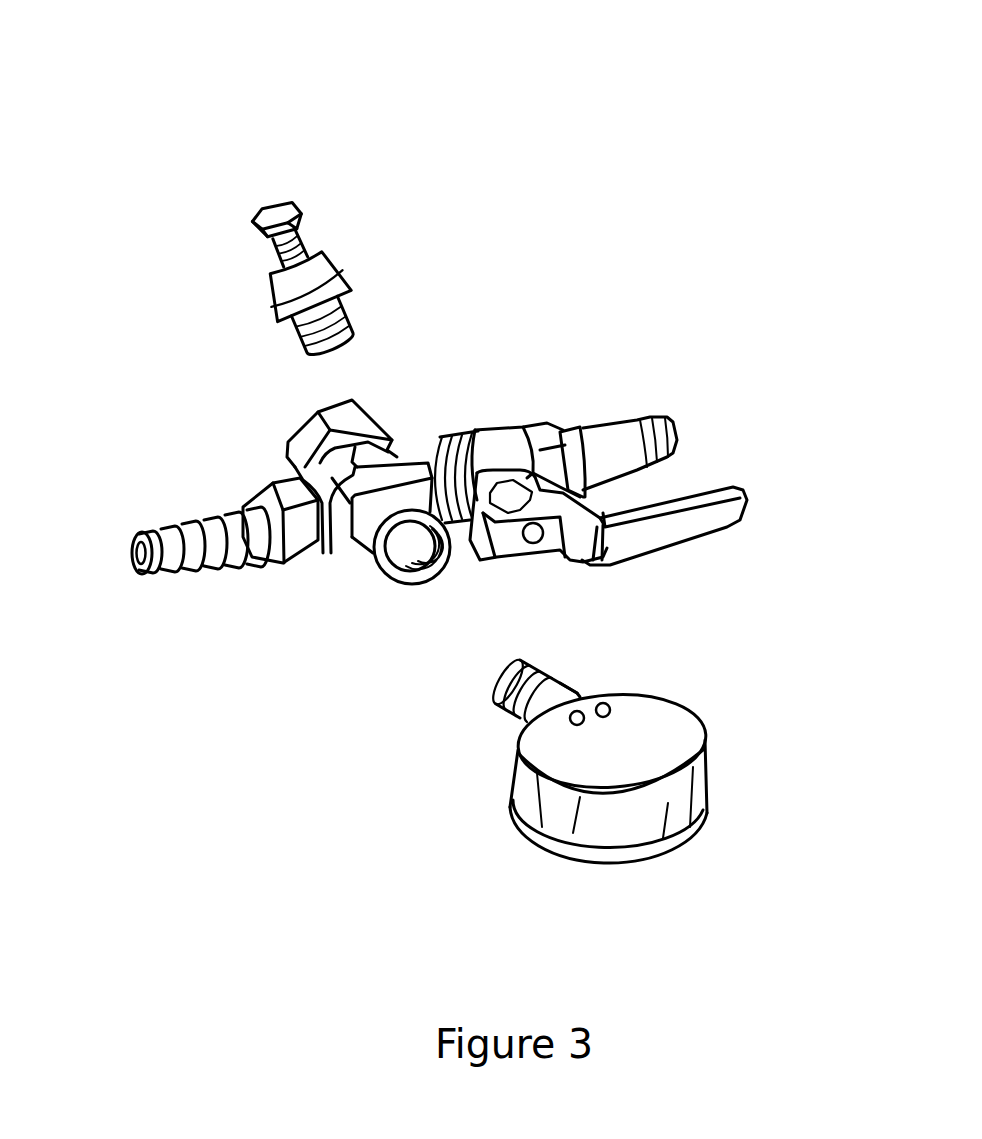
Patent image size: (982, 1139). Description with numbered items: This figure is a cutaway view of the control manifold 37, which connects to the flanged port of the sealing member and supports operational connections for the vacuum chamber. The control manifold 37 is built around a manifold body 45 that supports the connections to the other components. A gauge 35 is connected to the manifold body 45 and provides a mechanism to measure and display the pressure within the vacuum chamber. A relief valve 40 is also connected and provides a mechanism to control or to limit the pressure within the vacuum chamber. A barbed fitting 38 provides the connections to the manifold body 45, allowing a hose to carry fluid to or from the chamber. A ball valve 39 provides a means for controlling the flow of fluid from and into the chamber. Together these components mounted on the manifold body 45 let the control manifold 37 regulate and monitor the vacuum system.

The gauge 35 is at (587, 762).
The control manifold 37 is at (124, 187).
The barbed fitting 38 is at (178, 512).
The ball valve 39 is at (553, 420).
The relief valve 40 is at (305, 205).
The manifold body 45 is at (480, 430).